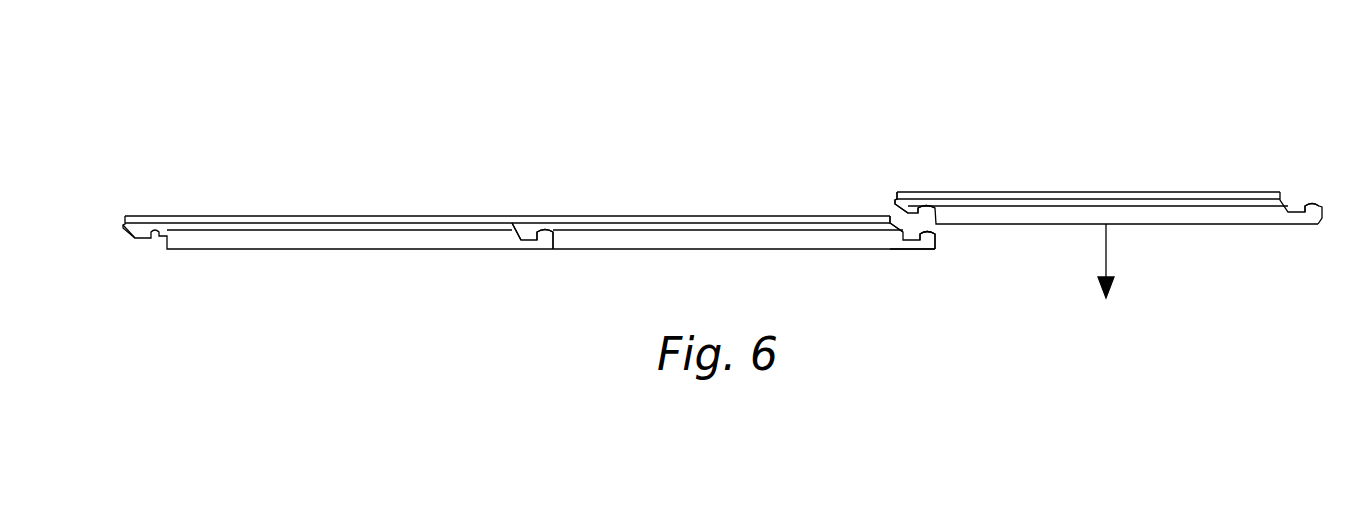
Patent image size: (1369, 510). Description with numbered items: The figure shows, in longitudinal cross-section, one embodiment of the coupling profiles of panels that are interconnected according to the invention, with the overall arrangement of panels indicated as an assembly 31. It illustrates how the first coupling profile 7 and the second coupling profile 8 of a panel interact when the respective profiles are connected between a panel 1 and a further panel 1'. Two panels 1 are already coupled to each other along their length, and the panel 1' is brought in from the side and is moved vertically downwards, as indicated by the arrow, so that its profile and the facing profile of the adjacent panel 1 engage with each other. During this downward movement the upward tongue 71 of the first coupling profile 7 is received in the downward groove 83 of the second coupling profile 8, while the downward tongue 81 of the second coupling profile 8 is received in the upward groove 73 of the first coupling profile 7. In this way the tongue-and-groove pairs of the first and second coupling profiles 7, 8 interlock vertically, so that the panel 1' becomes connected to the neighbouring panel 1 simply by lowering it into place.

The floor assembly 31 is at (261, 109).
The panel 1 is at (529, 195).
The panel 1' is at (1108, 190).
The second coupling profile 8 is at (135, 238).
The first coupling profile 7 is at (542, 242).
The downward tongue 81 is at (892, 212).
The downward groove 83 is at (930, 202).
The upward tongue 71 is at (933, 233).
The upward groove 73 is at (898, 249).